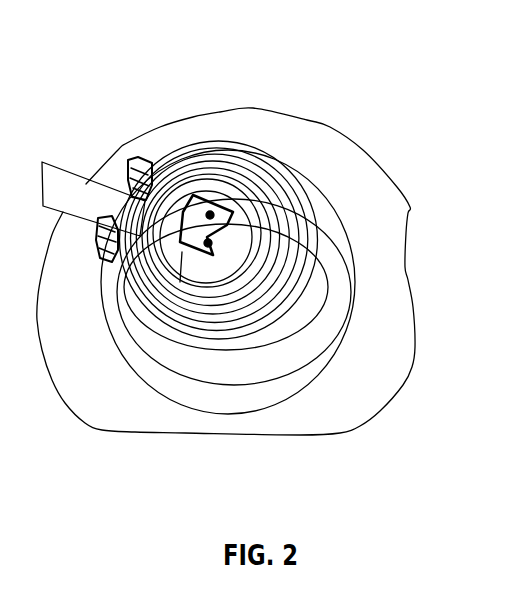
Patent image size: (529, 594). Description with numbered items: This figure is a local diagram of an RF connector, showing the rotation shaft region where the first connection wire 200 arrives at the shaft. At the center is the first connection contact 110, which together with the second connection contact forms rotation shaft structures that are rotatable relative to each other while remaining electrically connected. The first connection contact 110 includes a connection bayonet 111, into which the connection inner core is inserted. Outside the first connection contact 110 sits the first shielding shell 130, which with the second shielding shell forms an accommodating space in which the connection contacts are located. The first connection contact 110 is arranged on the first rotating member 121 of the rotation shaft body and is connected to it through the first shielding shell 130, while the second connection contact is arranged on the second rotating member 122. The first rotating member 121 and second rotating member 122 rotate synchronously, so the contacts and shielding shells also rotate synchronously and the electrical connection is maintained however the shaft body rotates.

The first connection contact 110 is at (193, 212).
The connection bayonet 111 is at (212, 212).
The first rotating member 121 is at (256, 354).
The second rotating member 122 is at (332, 153).
The first shielding shell 130 is at (196, 160).
The first connection wire 200 is at (67, 172).